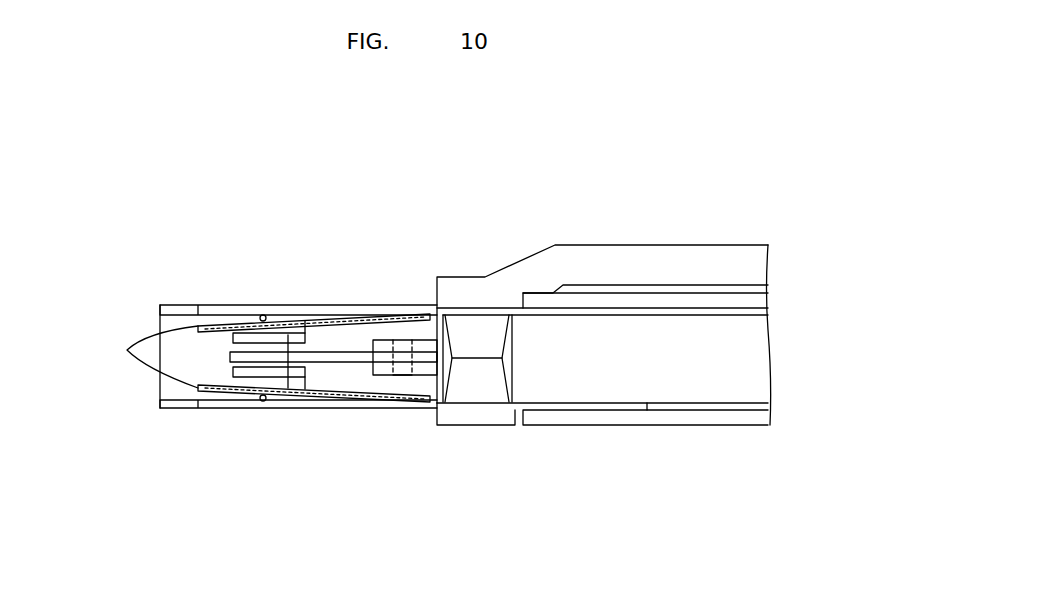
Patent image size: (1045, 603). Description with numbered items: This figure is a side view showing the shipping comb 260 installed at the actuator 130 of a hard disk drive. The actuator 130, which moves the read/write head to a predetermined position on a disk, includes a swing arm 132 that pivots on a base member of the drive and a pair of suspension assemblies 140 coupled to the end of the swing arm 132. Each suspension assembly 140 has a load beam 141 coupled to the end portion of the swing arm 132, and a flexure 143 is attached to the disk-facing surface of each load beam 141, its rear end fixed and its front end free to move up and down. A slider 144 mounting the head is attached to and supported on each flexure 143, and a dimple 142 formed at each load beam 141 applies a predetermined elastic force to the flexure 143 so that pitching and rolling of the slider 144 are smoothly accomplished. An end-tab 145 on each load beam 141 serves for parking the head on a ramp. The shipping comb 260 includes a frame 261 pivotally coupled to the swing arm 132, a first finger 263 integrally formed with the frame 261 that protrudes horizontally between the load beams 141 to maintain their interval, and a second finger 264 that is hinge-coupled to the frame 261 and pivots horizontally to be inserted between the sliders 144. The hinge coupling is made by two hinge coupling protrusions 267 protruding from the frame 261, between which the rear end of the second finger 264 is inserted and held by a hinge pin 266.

The actuator 130 is at (663, 452).
The swing arm 132 is at (727, 300).
The suspension assembly 140 is at (276, 455).
The load beam 141 is at (350, 307).
The dimple 142 is at (277, 318).
The flexure 143 is at (135, 357).
The slider 144 is at (283, 400).
The end-tab 145 is at (170, 305).
The shipping comb 260 is at (648, 235).
The frame 261 is at (560, 262).
The first finger 263 is at (470, 390).
The second finger 264 is at (248, 333).
The hinge pin 266 is at (412, 373).
The hinge coupling protrusion 267 is at (397, 340).